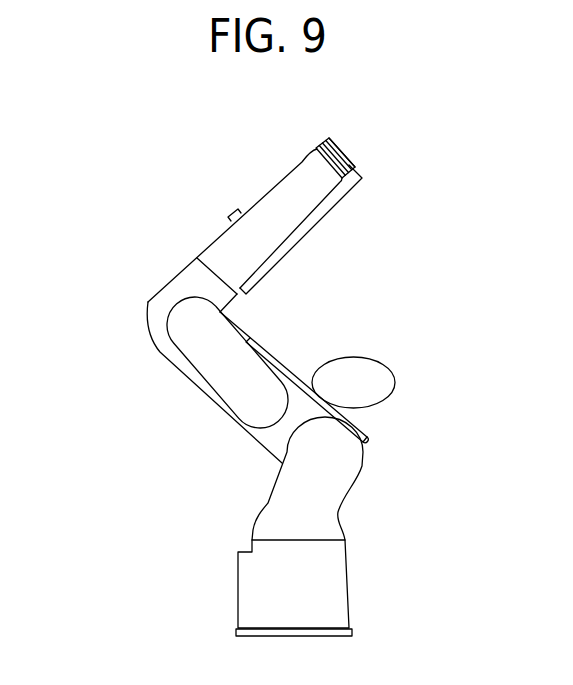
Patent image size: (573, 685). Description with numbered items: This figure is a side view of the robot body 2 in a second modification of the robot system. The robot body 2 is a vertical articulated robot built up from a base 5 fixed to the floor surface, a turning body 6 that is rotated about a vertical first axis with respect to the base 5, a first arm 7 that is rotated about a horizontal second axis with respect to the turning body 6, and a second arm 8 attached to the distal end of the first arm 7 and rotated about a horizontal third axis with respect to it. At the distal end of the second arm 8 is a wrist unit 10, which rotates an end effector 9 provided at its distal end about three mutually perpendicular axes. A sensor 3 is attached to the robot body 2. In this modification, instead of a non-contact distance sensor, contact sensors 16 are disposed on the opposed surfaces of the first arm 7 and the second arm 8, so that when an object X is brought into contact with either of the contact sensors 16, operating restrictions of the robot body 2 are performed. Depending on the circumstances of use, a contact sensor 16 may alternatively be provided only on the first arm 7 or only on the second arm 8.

The robot body 2 is at (112, 253).
The sensor 3 is at (390, 426).
The base 5 is at (350, 580).
The turning body 6 is at (362, 471).
The first arm 7 is at (200, 376).
The second arm 8 is at (279, 179).
The end effector 9 is at (340, 146).
The wrist unit 10 is at (376, 147).
The contact sensor 16 is at (327, 214).
The object X is at (374, 358).